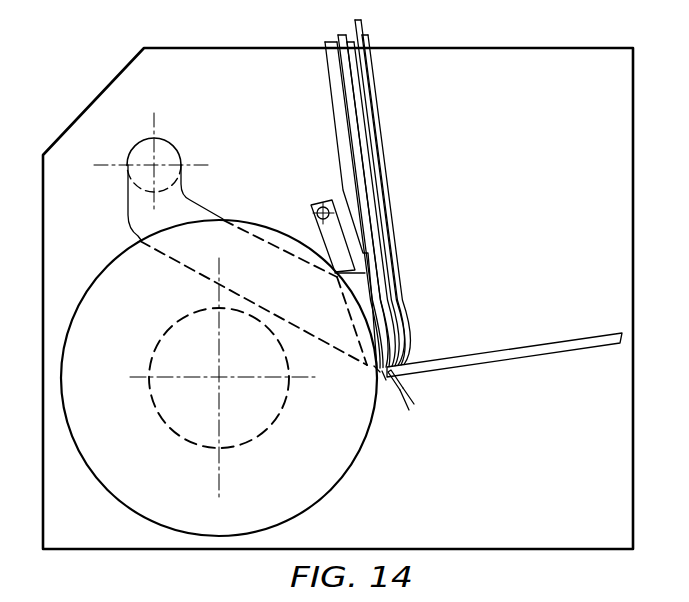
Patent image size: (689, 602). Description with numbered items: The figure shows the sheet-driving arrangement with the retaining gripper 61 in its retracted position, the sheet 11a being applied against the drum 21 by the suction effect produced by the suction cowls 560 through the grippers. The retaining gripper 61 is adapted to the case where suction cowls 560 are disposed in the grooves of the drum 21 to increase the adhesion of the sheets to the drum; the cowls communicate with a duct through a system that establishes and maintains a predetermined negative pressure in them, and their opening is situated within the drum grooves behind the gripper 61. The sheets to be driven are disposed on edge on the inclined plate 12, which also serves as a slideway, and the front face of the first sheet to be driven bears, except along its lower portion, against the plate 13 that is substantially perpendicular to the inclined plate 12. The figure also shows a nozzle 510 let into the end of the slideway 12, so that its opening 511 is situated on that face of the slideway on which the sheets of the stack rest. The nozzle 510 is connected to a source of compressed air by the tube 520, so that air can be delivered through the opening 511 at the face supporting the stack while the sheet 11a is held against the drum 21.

The sheet 11a is at (376, 372).
The inclined plate 12 is at (494, 361).
The plate 13 is at (335, 74).
The drum 21 is at (92, 289).
The retaining gripper 61 is at (347, 280).
The nozzle 510 is at (403, 380).
The opening 511 is at (390, 379).
The tube 520 is at (411, 412).
The suction cowls 560 is at (225, 248).